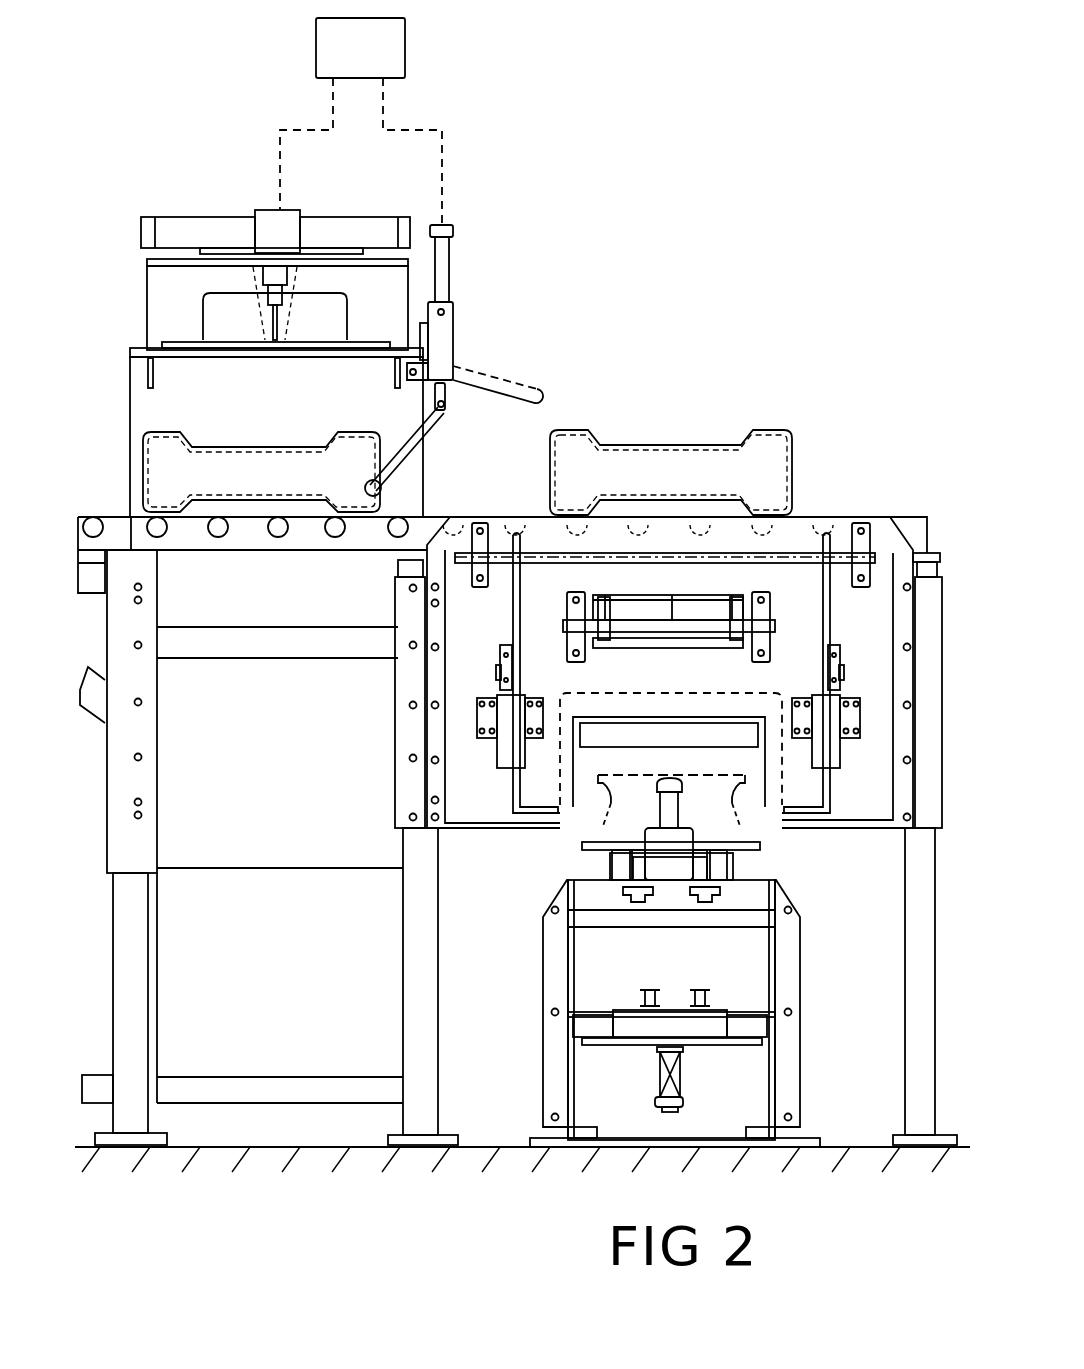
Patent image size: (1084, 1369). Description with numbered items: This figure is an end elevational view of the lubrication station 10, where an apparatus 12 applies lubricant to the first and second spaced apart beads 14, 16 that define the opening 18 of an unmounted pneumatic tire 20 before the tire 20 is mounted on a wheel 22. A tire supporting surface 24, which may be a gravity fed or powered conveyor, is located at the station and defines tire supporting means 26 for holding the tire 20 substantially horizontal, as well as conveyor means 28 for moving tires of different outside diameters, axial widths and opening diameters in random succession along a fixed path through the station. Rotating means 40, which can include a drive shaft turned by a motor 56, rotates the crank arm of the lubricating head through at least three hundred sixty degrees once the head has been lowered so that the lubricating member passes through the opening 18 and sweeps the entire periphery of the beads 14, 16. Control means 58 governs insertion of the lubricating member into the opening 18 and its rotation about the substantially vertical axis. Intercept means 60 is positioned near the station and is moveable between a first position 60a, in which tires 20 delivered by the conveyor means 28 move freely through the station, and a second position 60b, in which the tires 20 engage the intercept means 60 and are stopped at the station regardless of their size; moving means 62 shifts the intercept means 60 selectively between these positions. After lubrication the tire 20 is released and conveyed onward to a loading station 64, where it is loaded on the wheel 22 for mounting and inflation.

The lubrication station 10 is at (232, 20).
The apparatus 12 is at (243, 324).
The first bead 14 is at (200, 440).
The second bead 16 is at (198, 500).
The opening 18 is at (307, 443).
The unmounted pneumatic tire 20 is at (247, 428).
The wheel 22 is at (604, 828).
The tire supporting surface 24 is at (226, 522).
The tire supporting means 26 is at (285, 539).
The conveyor means 28 is at (103, 508).
The rotating means 40 is at (266, 208).
The motor 56 is at (292, 222).
The control means 58 is at (405, 38).
The intercept means 60 is at (528, 282).
The first position 60a is at (517, 378).
The second position 60b is at (400, 438).
The moving means 62 is at (455, 248).
The loading station 64 is at (789, 406).